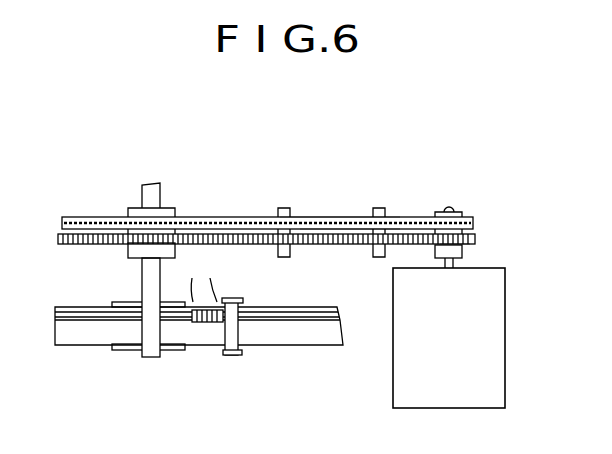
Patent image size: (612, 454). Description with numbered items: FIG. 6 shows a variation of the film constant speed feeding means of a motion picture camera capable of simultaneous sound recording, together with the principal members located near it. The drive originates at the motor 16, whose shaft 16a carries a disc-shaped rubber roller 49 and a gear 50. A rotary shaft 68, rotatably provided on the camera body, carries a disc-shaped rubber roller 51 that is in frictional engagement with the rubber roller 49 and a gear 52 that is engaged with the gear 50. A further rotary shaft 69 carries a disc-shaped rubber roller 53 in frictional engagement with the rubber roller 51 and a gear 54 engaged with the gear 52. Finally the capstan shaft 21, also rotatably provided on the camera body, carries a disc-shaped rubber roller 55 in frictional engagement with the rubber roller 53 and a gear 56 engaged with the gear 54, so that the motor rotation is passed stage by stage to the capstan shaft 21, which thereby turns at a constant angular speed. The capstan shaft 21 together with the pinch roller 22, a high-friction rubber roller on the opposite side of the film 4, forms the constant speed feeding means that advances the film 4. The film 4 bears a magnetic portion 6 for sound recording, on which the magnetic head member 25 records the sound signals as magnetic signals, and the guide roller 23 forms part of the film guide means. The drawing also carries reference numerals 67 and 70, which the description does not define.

The film 4 is at (317, 343).
The magnetic portion for sound recording 6 is at (325, 308).
The motor 16 is at (492, 380).
The shaft of the motor 16a is at (445, 208).
The capstan shaft 21 is at (150, 358).
The pinch roller 22 is at (123, 352).
The guide roller 23 is at (238, 355).
The magnetic head member 25 is at (205, 322).
The disc-shaped rubber roller 49 is at (472, 222).
The gear 50 is at (477, 240).
The disc-shaped rubber roller 51 is at (363, 218).
The gear 52 is at (398, 240).
The disc-shaped rubber roller 53 is at (307, 218).
The gear 54 is at (318, 224).
The disc-shaped rubber roller 55 is at (207, 223).
The gear 56 is at (220, 240).
The bearing 67 is at (462, 212).
The rotary shaft 68 is at (380, 258).
The rotary shaft 69 is at (285, 258).
The bearing block 70 is at (168, 212).